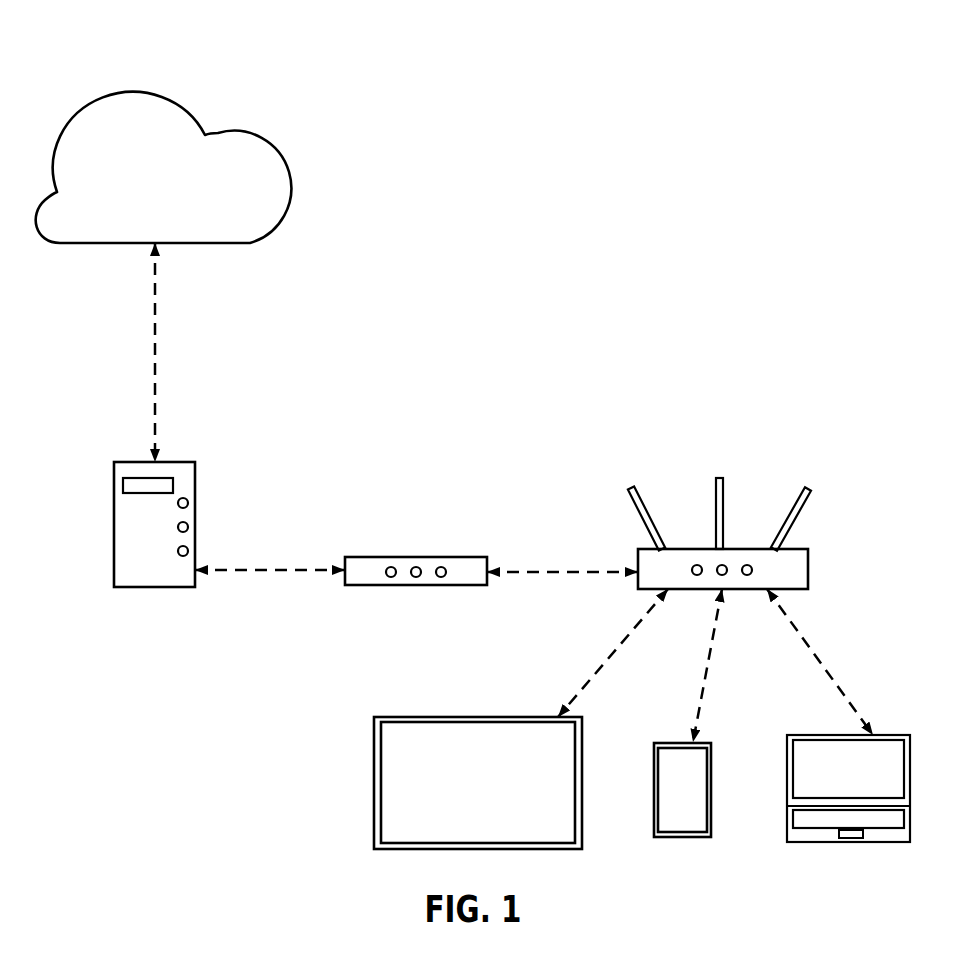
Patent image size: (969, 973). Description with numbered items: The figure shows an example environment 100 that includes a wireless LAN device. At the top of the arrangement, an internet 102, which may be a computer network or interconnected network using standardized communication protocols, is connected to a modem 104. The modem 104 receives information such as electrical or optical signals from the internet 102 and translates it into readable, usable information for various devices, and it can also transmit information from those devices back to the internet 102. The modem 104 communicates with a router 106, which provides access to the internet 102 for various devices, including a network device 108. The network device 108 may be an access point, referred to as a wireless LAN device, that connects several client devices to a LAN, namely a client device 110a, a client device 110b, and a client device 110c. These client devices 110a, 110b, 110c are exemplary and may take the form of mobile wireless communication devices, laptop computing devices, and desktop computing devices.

The environment 100 is at (760, 118).
The internet 102 is at (160, 102).
The modem 104 is at (179, 461).
The router 106 is at (398, 557).
The network device 108 is at (685, 549).
The client device 110a is at (431, 717).
The client device 110b is at (677, 742).
The client device 110c is at (796, 735).